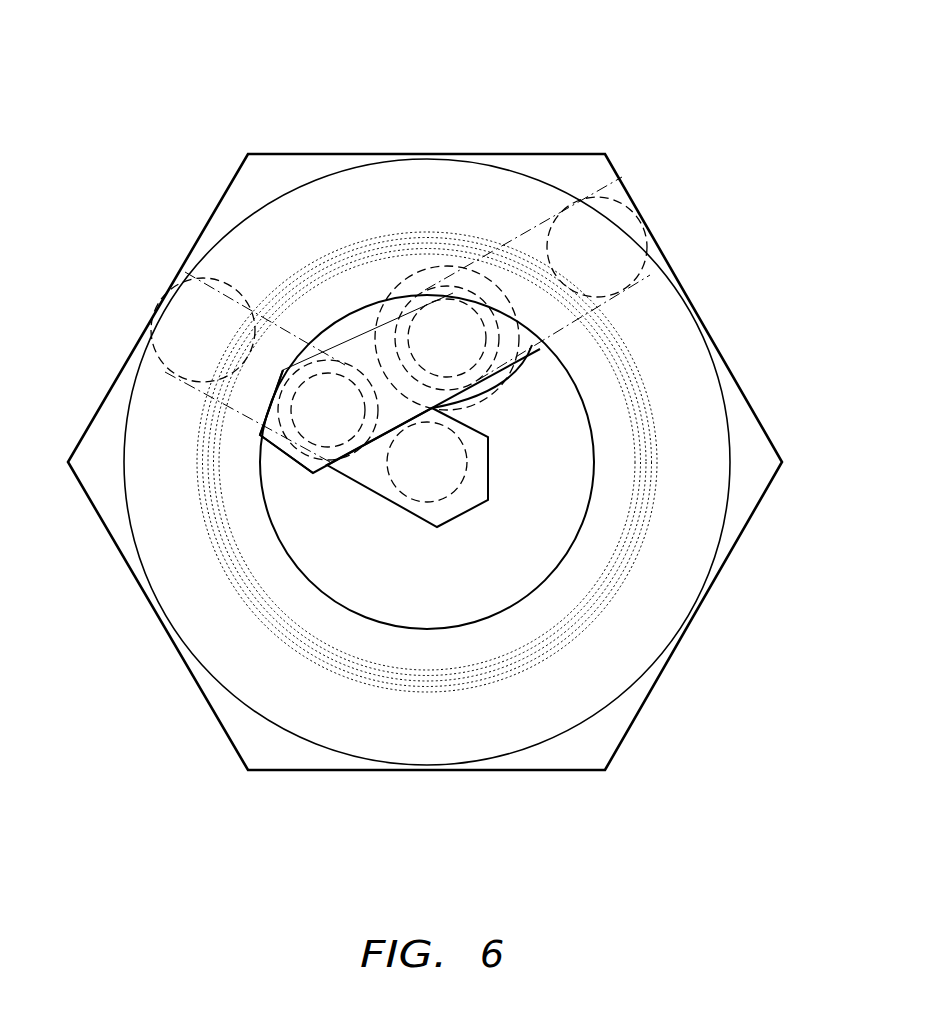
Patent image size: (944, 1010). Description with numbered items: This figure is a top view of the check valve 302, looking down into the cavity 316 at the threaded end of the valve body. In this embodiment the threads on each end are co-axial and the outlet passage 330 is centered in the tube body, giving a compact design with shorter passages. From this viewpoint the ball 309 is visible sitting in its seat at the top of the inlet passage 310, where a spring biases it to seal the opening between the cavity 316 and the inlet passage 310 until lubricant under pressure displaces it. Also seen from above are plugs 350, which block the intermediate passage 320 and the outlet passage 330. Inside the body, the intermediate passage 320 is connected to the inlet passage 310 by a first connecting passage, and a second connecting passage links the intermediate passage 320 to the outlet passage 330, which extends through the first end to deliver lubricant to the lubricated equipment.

The check valve 302 is at (173, 46).
The ball 309 is at (453, 295).
The inlet passage 310 is at (483, 347).
The cavity 316 is at (440, 585).
The intermediate passage 320 is at (268, 428).
The outlet passage 330 is at (437, 492).
The plugs 350 is at (628, 220).